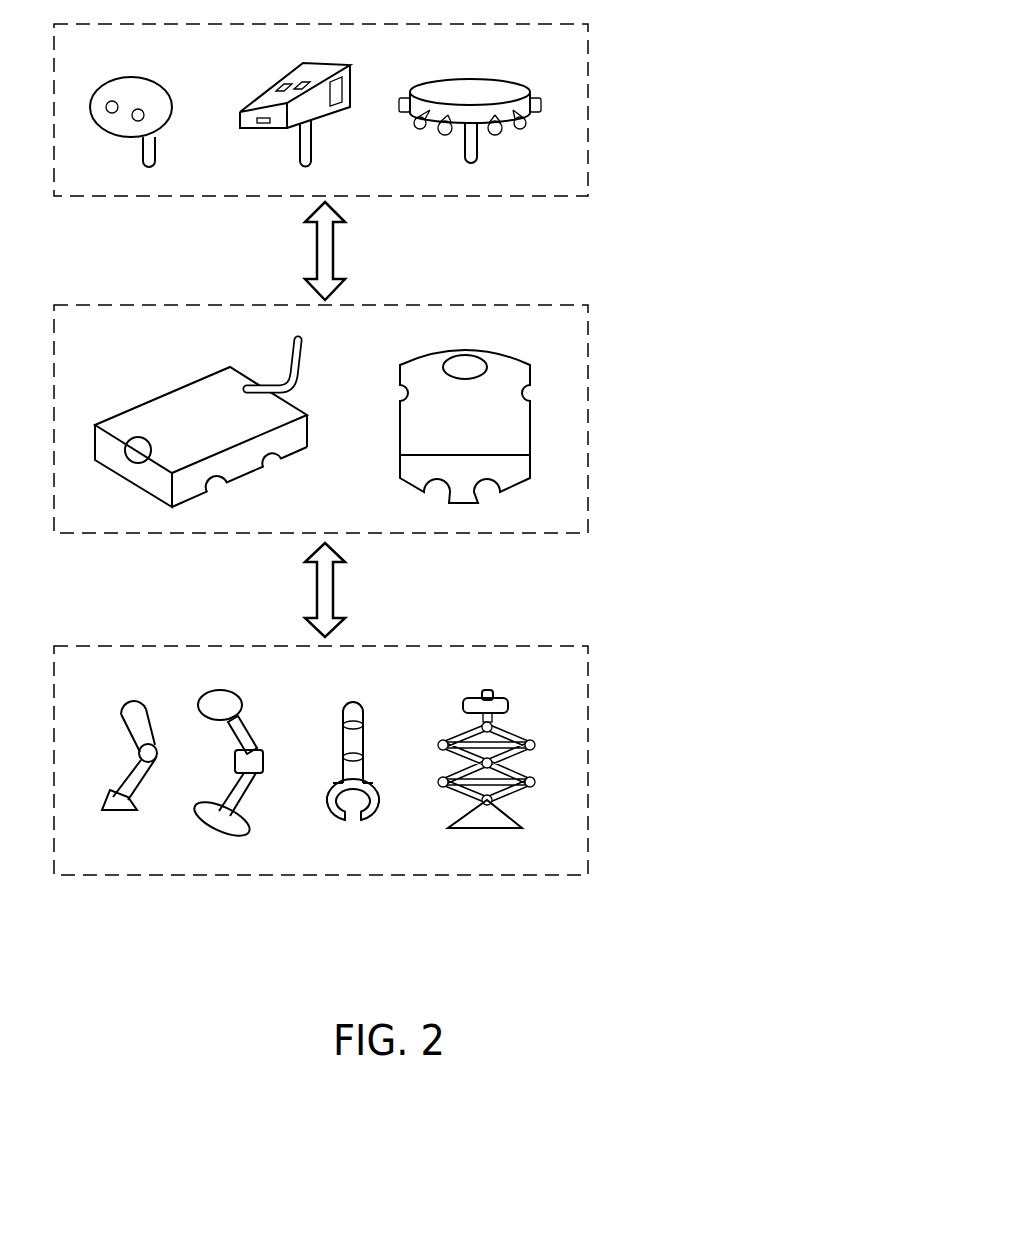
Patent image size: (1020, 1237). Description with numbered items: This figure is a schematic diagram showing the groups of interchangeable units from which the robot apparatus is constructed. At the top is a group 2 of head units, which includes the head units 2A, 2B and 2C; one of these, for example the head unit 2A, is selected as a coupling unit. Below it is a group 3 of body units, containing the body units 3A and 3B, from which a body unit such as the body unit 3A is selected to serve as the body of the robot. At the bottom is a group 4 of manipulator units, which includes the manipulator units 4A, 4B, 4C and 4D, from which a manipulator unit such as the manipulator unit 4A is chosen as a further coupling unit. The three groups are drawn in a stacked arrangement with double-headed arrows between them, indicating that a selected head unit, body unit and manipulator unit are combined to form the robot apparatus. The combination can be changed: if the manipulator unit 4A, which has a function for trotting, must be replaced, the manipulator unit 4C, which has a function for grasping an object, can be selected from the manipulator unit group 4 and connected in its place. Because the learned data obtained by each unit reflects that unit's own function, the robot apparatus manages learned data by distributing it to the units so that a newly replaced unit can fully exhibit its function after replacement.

The group of head units 2 is at (586, 38).
The head unit 2A is at (147, 75).
The head unit 2B is at (290, 73).
The head unit 2C is at (467, 78).
The group of body units 3 is at (587, 345).
The body unit 3A is at (167, 392).
The body unit 3B is at (420, 355).
The group of manipulator units 4 is at (587, 683).
The manipulator unit 4A is at (130, 703).
The manipulator unit 4B is at (256, 680).
The manipulator unit 4C is at (355, 702).
The manipulator unit 4D is at (508, 700).